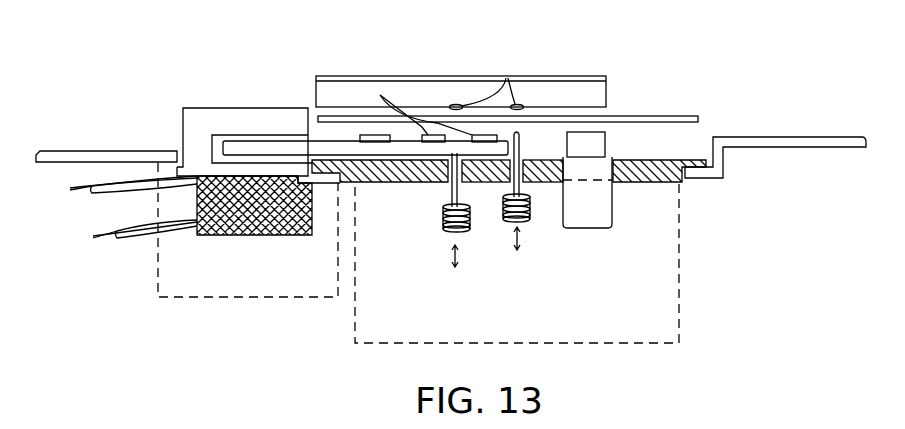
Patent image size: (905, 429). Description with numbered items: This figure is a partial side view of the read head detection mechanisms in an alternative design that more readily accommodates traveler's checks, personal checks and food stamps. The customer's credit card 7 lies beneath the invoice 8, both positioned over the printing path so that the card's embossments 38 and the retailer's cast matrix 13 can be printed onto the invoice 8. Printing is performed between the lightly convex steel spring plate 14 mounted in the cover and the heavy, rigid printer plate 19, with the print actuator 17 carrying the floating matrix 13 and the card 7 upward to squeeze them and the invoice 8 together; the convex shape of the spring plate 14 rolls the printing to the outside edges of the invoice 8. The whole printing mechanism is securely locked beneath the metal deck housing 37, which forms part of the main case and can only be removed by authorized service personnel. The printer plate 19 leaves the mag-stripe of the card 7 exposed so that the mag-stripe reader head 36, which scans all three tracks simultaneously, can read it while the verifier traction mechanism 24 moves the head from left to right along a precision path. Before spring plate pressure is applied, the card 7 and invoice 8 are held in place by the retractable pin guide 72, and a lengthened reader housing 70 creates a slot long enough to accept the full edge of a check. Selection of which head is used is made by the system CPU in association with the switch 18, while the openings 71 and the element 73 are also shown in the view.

The credit card 7 is at (226, 149).
The invoice 8 is at (695, 115).
The cast matrix 13 is at (598, 142).
The spring plate 14 is at (419, 78).
The print actuator 17 is at (660, 208).
The switch 18 is at (452, 192).
The printer plate 19 is at (402, 184).
The verifier traction mechanism 24 is at (180, 274).
The mag-stripe reader head 36 is at (197, 196).
The main deck housing 37 is at (93, 151).
The card embossments 38 is at (373, 135).
The reader housing 70 is at (218, 123).
The contact openings 71 is at (507, 78).
The retractable pin guide 72 is at (530, 192).
The block 73 is at (598, 220).